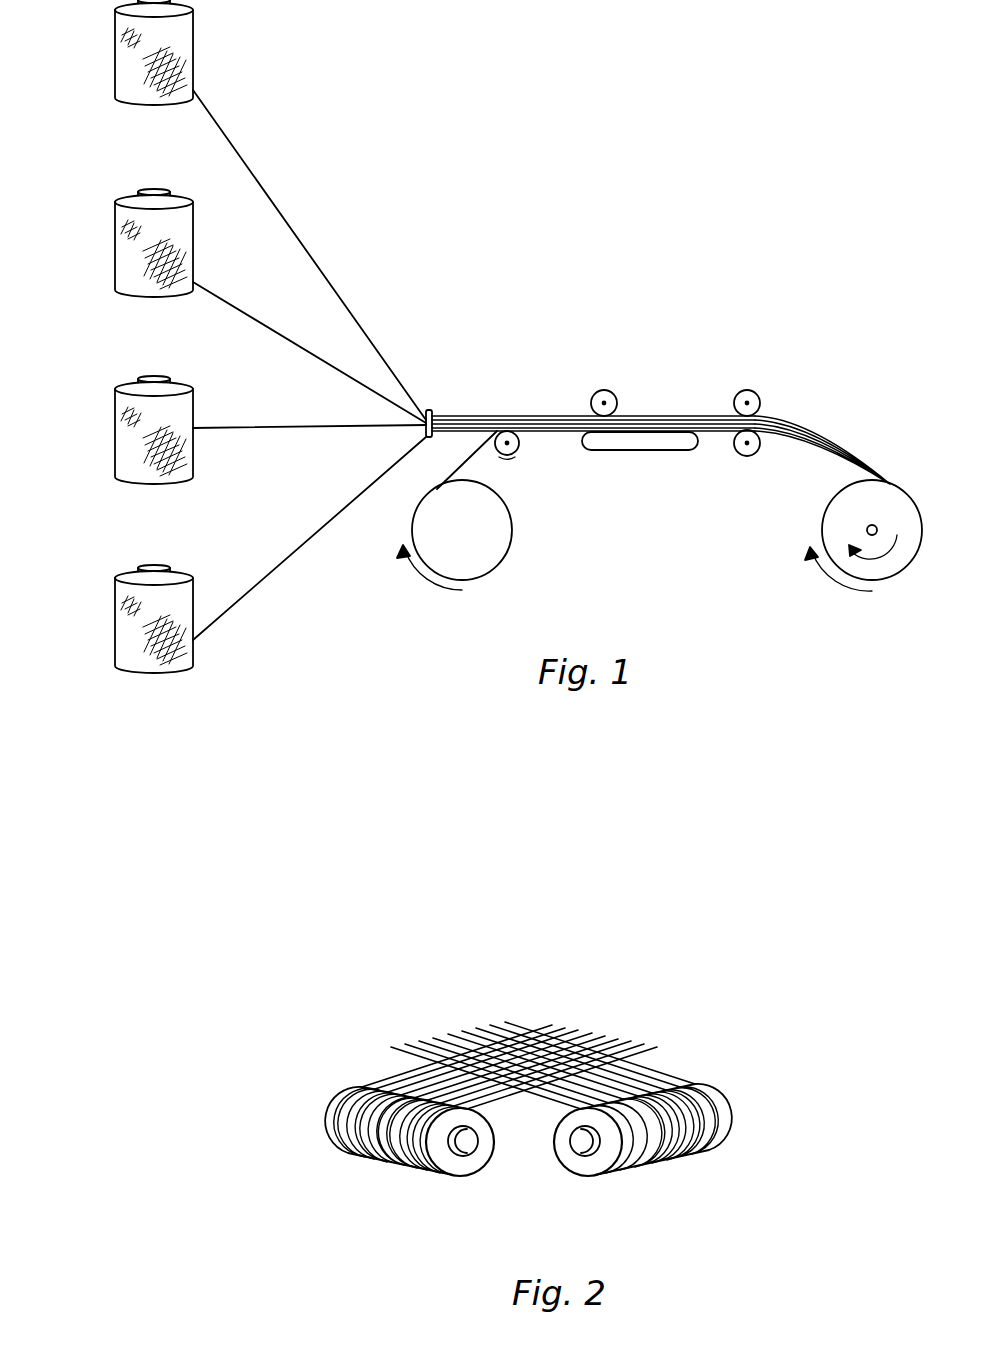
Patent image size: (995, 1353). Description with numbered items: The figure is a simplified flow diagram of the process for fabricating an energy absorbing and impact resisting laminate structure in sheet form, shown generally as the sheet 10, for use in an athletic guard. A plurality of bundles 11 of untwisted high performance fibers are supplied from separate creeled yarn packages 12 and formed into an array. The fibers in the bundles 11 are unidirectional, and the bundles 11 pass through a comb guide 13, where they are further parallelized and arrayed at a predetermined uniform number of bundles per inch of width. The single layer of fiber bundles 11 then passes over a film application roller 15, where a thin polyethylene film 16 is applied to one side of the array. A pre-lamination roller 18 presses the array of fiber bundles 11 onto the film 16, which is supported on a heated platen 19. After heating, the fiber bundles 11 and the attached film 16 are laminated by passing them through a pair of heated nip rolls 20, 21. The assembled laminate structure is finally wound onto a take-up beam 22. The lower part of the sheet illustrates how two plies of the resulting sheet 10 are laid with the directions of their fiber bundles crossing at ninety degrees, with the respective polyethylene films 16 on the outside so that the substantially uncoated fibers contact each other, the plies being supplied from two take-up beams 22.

In FIG. 1, the laminate structure in sheet form 10 is at (836, 452).
In FIG. 2, the laminate structure in sheet form 10 is at (415, 1083).
In FIG. 1, the bundles of untwisted high performance fibers 11 is at (243, 308).
In FIG. 1, the creeled yarn packages 12 is at (120, 74).
In FIG. 1, the comb guide 13 is at (432, 410).
In FIG. 1, the film application roller 15 is at (520, 447).
In FIG. 1, the polyethylene film 16 is at (468, 463).
In FIG. 1, the pre-lamination roller 18 is at (598, 390).
In FIG. 1, the heated platen 19 is at (650, 452).
In FIG. 1, the heated nip roll 20 is at (740, 392).
In FIG. 1, the heated nip roll 21 is at (744, 457).
In FIG. 1, the take-up beam 22 is at (833, 523).
In FIG. 2, the take-up beam 22 is at (336, 1142).